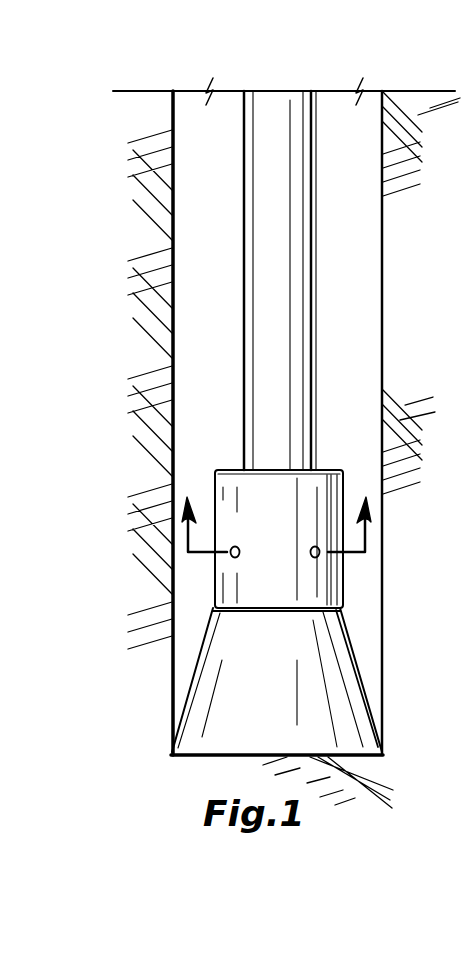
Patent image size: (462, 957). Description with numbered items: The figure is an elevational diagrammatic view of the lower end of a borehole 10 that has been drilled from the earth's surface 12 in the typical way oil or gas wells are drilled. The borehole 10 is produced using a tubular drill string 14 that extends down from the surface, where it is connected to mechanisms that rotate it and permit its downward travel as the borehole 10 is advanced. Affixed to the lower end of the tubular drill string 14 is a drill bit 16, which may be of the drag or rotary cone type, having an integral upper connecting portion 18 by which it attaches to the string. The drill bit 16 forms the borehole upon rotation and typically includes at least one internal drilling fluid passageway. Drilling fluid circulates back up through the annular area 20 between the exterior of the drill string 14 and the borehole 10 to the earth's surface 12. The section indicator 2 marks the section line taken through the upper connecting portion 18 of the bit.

The borehole 10 is at (375, 233).
The earth's surface 12 is at (425, 385).
The tubular drill string 14 is at (291, 190).
The drill bit 16 is at (332, 667).
The upper connecting portion 18 is at (322, 585).
The annular area 20 is at (222, 168).
The section line 2- 2 is at (277, 500).